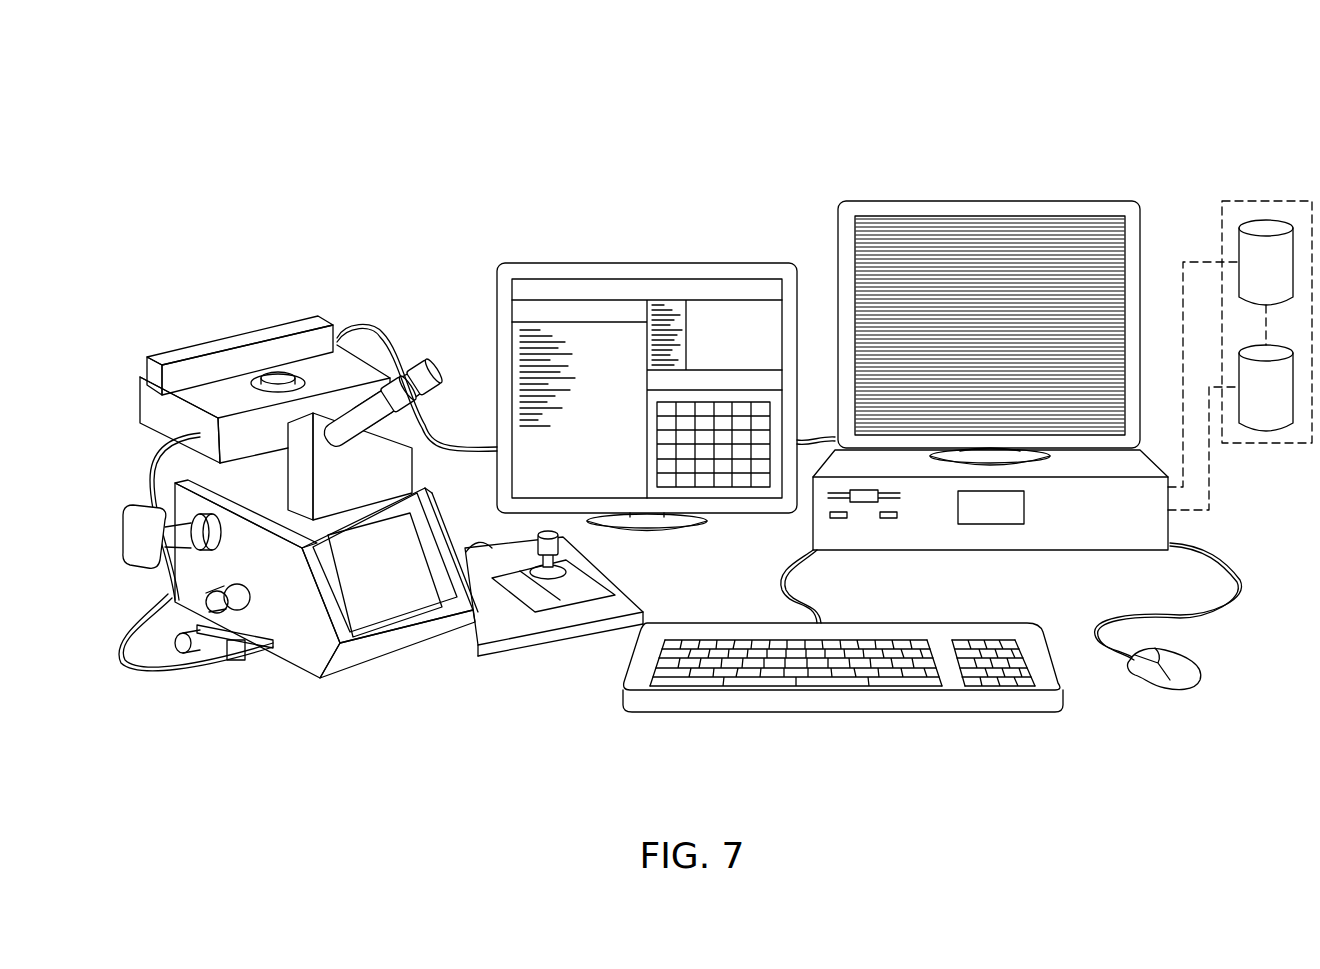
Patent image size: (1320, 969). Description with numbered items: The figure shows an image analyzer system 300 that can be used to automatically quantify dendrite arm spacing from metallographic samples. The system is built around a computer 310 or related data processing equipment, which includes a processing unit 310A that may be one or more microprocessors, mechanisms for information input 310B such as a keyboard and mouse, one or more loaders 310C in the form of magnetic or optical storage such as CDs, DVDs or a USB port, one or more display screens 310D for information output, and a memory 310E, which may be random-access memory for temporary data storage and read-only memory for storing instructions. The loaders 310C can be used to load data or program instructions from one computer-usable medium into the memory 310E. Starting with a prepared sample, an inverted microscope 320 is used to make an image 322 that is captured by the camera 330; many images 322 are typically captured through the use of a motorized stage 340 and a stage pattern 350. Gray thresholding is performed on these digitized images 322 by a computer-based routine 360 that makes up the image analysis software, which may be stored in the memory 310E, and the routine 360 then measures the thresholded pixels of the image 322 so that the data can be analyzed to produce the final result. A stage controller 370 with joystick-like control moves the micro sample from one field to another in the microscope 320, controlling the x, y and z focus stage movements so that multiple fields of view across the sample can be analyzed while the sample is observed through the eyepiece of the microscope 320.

The image analyzer system 300 is at (691, 427).
The computer 310 is at (971, 447).
The processing unit 310A is at (1024, 507).
The mechanisms for information input 310B is at (956, 678).
The loaders 310C is at (895, 502).
The display screens 310D is at (1068, 200).
The memory 310E is at (1276, 200).
The inverted microscope 320 is at (308, 542).
The image 322 is at (990, 292).
The camera 330 is at (142, 484).
The motorized stage 340 is at (240, 312).
The stage pattern 350 is at (713, 400).
The computer-based routine 360 is at (647, 365).
The stage controller 370 is at (554, 641).